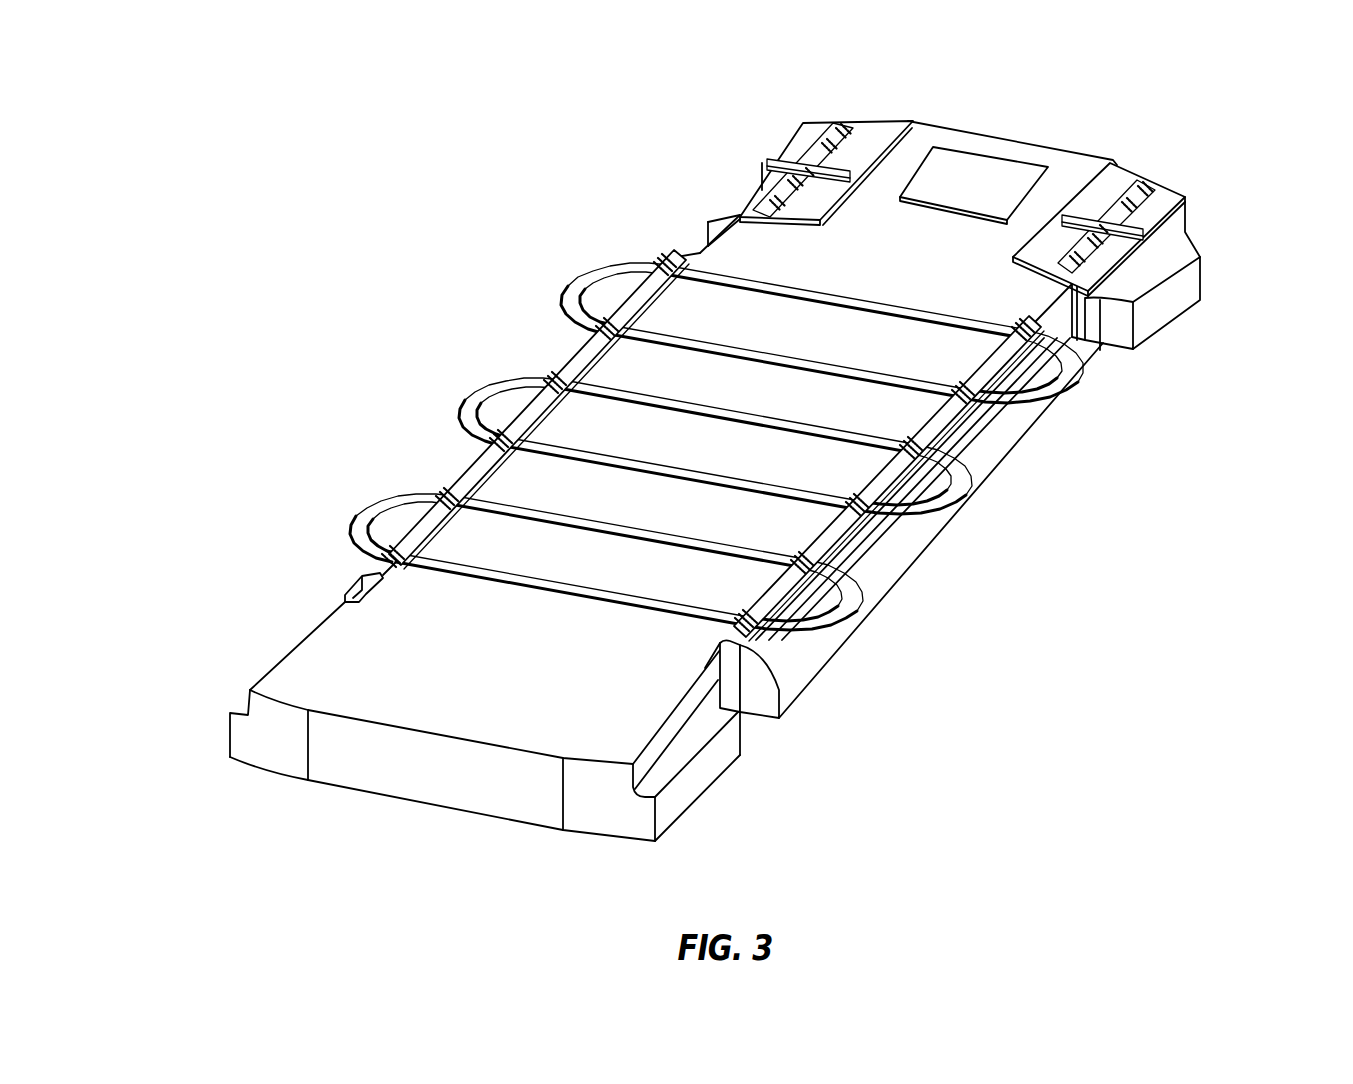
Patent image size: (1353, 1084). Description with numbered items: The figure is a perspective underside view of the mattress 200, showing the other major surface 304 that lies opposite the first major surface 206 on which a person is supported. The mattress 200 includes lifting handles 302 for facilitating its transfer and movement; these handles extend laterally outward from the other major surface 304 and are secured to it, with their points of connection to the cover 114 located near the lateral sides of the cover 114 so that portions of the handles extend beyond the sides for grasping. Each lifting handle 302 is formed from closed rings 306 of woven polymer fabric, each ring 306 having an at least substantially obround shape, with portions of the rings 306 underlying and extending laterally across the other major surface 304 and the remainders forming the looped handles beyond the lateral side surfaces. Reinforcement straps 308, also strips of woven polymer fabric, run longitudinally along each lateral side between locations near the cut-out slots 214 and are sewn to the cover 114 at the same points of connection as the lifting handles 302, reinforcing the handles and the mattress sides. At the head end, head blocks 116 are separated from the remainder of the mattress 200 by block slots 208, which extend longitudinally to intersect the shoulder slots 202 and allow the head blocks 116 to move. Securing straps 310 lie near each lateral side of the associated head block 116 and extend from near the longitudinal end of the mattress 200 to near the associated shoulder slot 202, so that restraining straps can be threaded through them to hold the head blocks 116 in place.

The mattress 200 is at (1062, 98).
The cover 114 is at (248, 743).
The head blocks 116 is at (793, 144).
The shoulder slots 202 is at (732, 212).
The major surface 206 is at (446, 795).
The block slots 208 is at (908, 121).
The cut-out slots 214 is at (703, 238).
The lifting handles 302 is at (583, 292).
The other major surface 304 is at (325, 637).
The closed rings 306 is at (667, 338).
The reinforcement straps 308 is at (657, 288).
The securing straps 310 is at (768, 188).